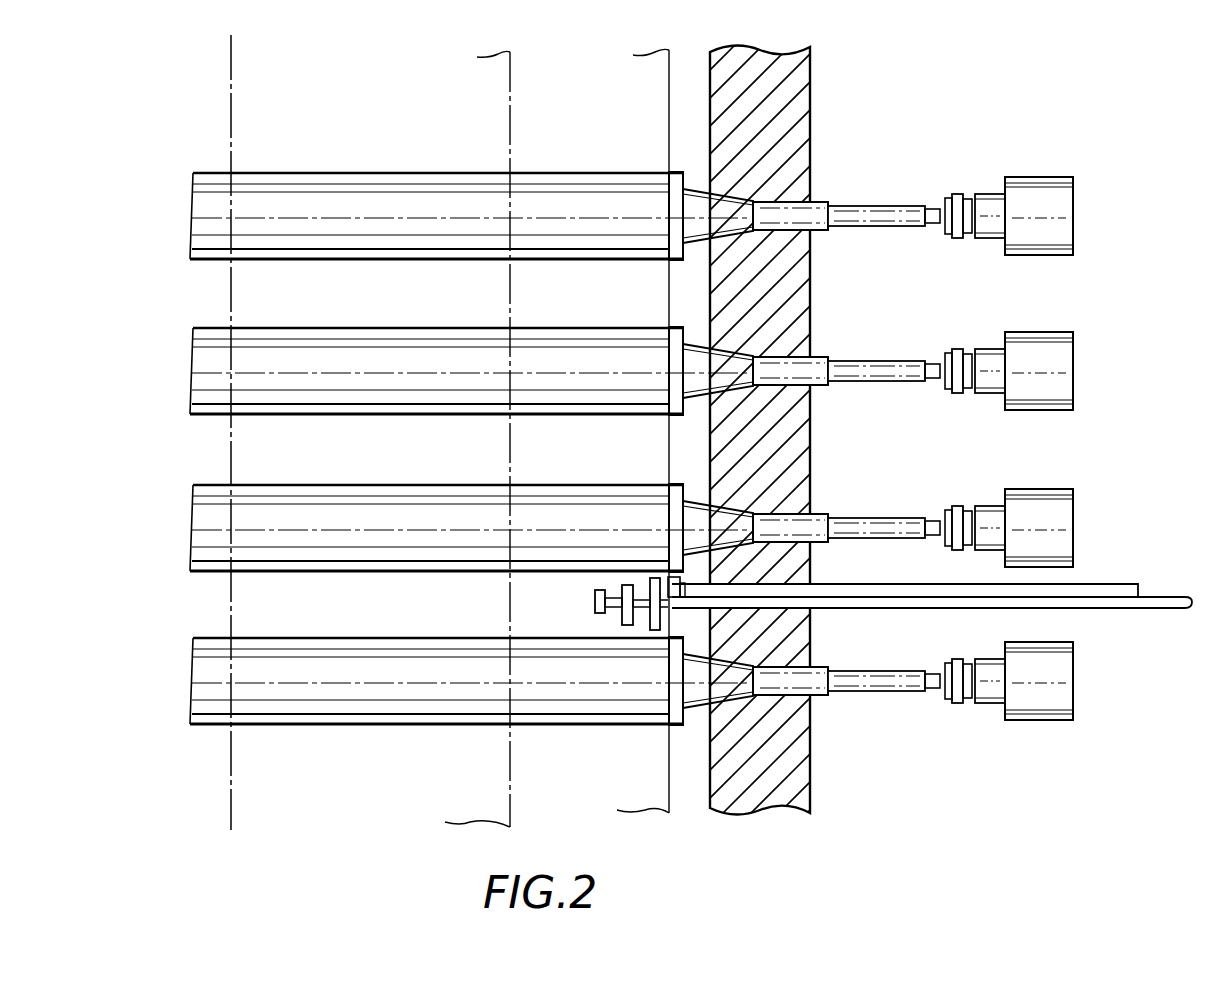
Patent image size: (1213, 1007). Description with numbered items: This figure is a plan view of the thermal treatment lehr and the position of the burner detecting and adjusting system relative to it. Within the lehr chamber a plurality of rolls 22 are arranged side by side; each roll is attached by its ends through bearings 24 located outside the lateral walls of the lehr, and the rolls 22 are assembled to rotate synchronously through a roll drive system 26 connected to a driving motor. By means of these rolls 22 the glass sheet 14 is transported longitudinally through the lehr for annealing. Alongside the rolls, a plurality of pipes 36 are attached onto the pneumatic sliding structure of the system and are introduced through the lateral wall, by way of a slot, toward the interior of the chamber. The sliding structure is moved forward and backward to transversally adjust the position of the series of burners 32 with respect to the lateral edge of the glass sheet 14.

The glass sheet 14 is at (438, 470).
The rolls 22 is at (430, 680).
The bearings 24 is at (990, 215).
The roll drive system 26 is at (1033, 203).
The burners 32 is at (620, 620).
The pipes 36 is at (230, 595).